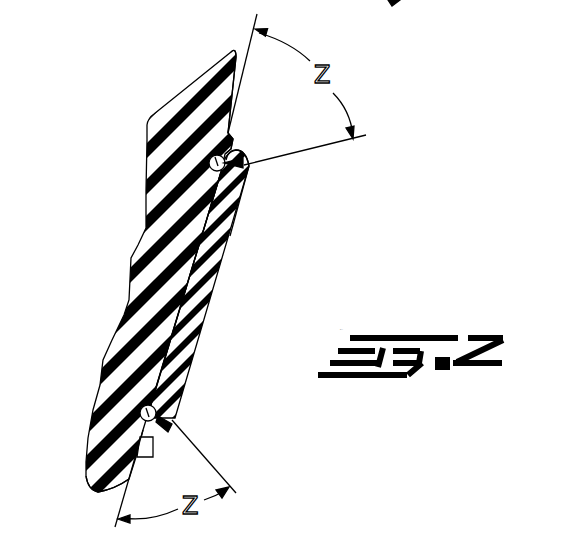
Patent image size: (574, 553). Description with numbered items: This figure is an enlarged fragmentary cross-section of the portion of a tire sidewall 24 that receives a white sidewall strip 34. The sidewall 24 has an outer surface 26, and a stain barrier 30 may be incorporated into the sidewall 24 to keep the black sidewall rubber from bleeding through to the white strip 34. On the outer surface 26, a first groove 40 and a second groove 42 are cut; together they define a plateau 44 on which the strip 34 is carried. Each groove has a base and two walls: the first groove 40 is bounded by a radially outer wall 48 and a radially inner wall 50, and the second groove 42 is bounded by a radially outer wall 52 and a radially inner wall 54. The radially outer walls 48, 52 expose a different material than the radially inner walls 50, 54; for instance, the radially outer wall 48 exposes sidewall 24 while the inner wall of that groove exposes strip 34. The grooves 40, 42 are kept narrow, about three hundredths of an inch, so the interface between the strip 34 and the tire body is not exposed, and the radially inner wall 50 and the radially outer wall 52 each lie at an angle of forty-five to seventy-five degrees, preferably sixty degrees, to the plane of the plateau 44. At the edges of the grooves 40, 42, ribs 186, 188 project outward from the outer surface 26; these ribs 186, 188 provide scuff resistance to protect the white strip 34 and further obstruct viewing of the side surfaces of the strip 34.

The sidewall 24 is at (238, 50).
The outer surface of sidewall 26 is at (140, 457).
The stain barrier 30 is at (100, 490).
The white sidewall strip 34 is at (218, 277).
The first groove 40 is at (243, 164).
The second groove 42 is at (173, 430).
The plateau 44 is at (178, 310).
The radially outer wall of first groove 48 is at (233, 130).
The radially inner wall of first groove 50 is at (241, 193).
The radially outer wall of second groove 52 is at (160, 407).
The radially inner wall of second groove 54 is at (140, 413).
The rib 186 is at (236, 152).
The rib 188 is at (153, 448).